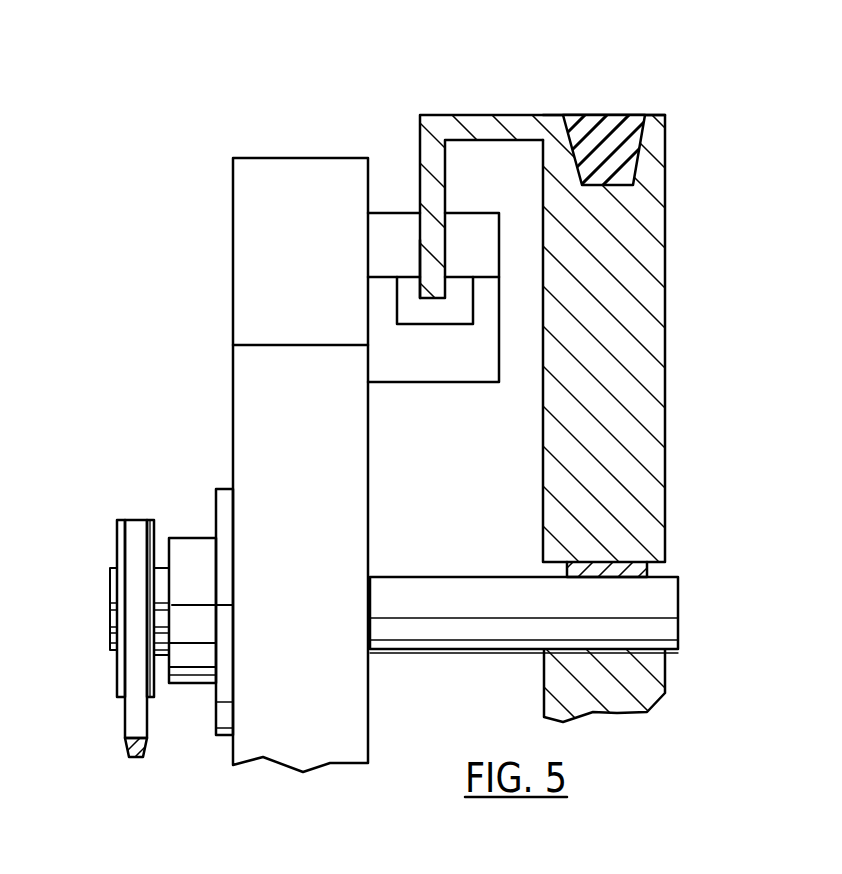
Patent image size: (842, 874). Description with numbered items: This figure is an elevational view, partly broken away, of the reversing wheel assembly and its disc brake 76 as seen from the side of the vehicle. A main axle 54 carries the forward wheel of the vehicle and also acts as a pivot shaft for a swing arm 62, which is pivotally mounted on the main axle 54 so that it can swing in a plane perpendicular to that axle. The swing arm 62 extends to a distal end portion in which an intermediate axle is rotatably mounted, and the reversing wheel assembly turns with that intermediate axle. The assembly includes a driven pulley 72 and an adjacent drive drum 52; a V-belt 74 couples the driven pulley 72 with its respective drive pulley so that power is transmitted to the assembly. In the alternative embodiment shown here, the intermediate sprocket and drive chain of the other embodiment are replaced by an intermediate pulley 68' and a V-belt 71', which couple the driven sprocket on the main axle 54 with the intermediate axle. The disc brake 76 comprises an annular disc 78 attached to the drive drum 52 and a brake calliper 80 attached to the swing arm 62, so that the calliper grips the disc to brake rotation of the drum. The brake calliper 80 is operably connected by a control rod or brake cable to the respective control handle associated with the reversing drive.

The drive drum 52 is at (485, 116).
The main axle 54 is at (680, 618).
The swing arm 62 is at (279, 157).
The intermediate pulley 68' is at (115, 632).
The V-belt 71' is at (136, 605).
The driven pulley 72 is at (660, 352).
The V-belt 74 is at (622, 116).
The disc brake 76 is at (368, 118).
The annular disc 78 is at (442, 197).
The brake calliper 80 is at (443, 363).